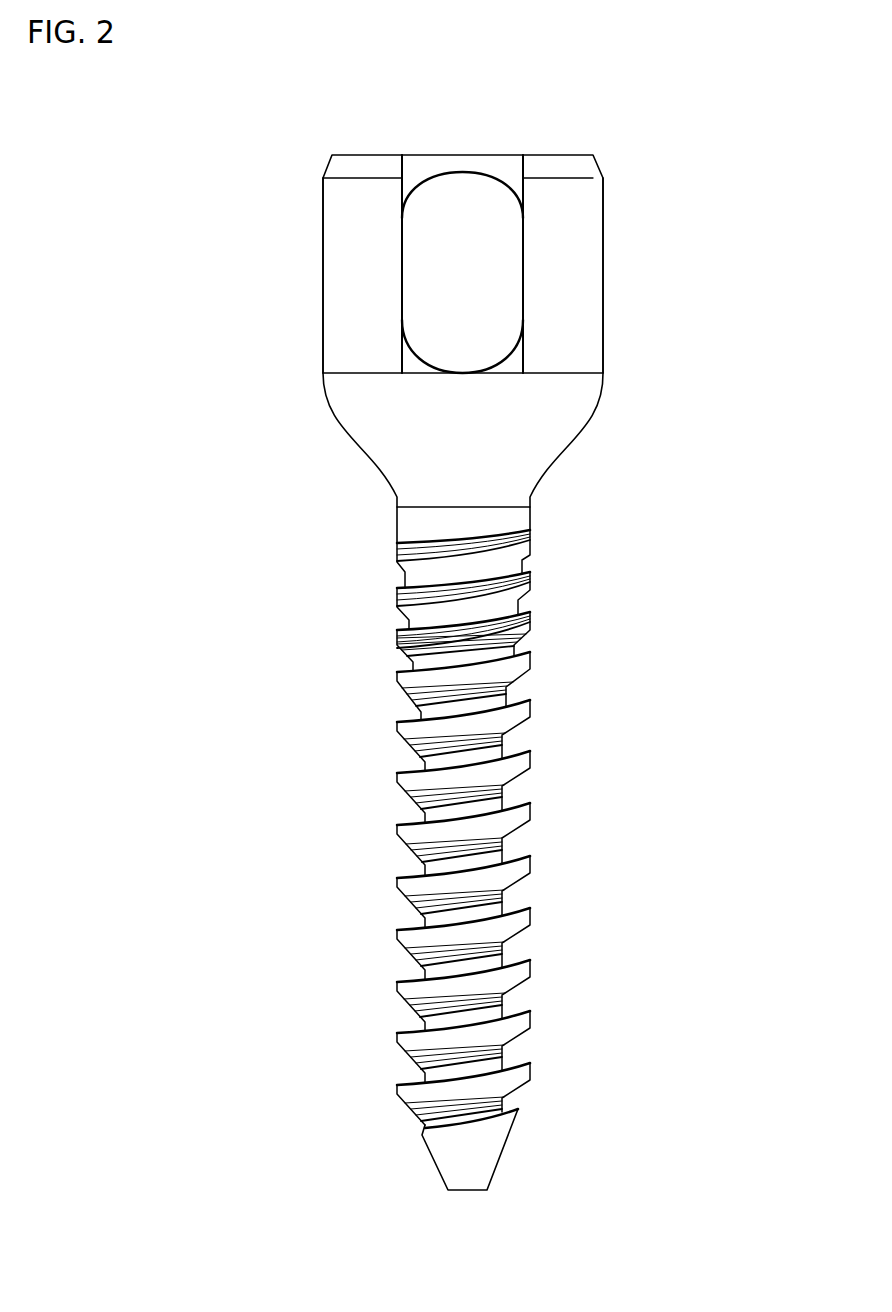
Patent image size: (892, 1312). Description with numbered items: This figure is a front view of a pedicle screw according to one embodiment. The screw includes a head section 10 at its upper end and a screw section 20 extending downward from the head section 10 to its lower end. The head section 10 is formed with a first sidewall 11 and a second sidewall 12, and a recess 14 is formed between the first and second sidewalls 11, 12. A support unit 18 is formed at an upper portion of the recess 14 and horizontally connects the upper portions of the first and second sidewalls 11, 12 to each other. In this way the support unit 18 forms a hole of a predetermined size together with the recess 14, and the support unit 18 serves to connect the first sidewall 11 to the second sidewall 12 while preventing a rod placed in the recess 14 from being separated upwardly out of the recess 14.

The head section 10 is at (493, 302).
The first sidewall 11 is at (337, 277).
The second sidewall 12 is at (592, 278).
The recess 14 is at (453, 307).
The support unit 18 is at (423, 167).
The screw section 20 is at (617, 798).